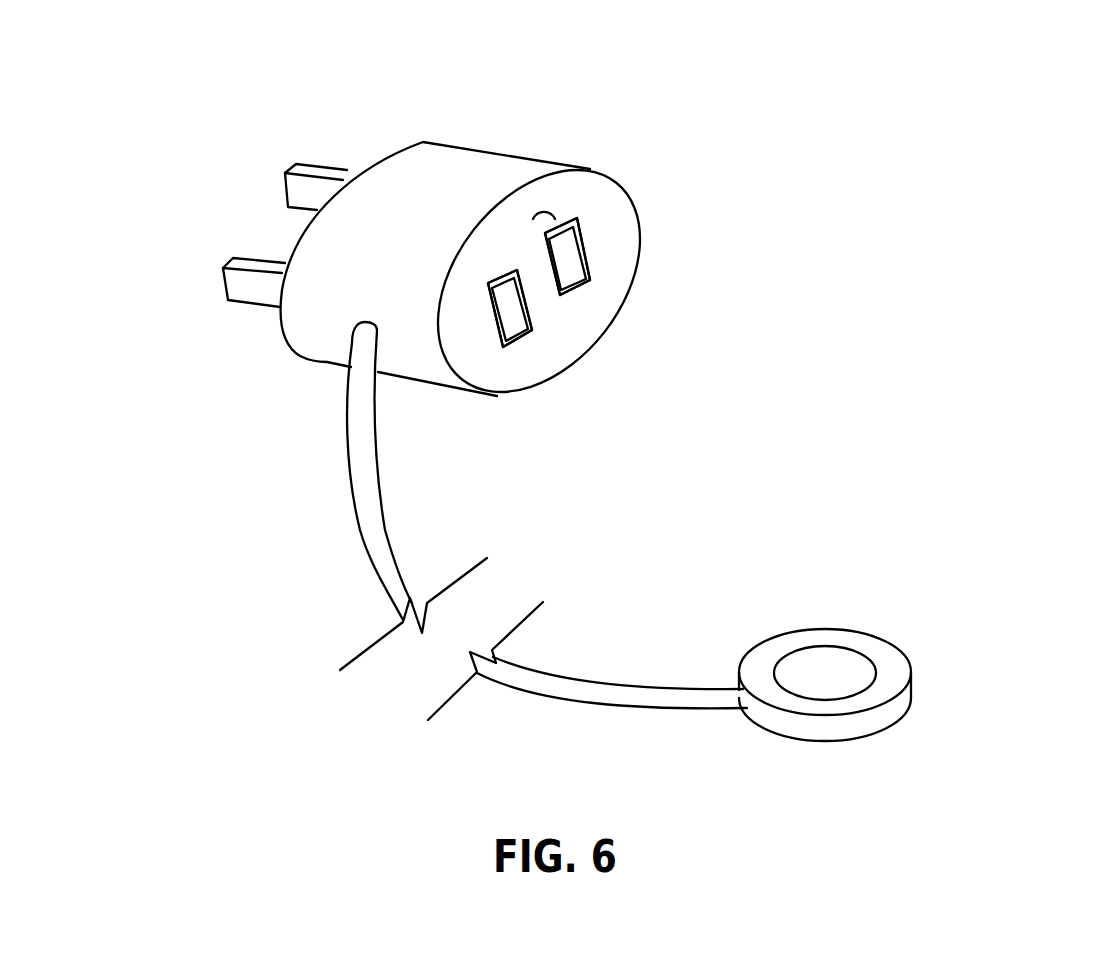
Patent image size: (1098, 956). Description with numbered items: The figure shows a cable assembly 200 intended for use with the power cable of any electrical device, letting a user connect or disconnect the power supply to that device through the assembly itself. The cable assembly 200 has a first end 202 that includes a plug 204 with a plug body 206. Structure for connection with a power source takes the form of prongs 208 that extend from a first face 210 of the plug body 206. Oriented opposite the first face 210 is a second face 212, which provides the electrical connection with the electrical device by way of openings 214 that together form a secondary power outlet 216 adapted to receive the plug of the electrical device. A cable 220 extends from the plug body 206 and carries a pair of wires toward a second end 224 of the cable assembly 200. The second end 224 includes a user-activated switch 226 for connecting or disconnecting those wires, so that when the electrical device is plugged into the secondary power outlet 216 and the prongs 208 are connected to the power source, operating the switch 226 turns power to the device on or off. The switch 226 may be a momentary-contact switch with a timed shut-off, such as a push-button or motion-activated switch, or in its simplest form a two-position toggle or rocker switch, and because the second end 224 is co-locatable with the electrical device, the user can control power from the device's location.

The cable assembly 200 is at (923, 302).
The first end 202 is at (575, 87).
The plug 204 is at (465, 423).
The plug body 206 is at (633, 268).
The prongs 208 is at (345, 140).
The first face 210 is at (280, 337).
The second face 212 is at (608, 218).
The openings 214 is at (588, 284).
The secondary power outlet 216 is at (543, 210).
The cable 220 is at (567, 743).
The second end 224 is at (893, 595).
The user-activated switch 226 is at (913, 668).